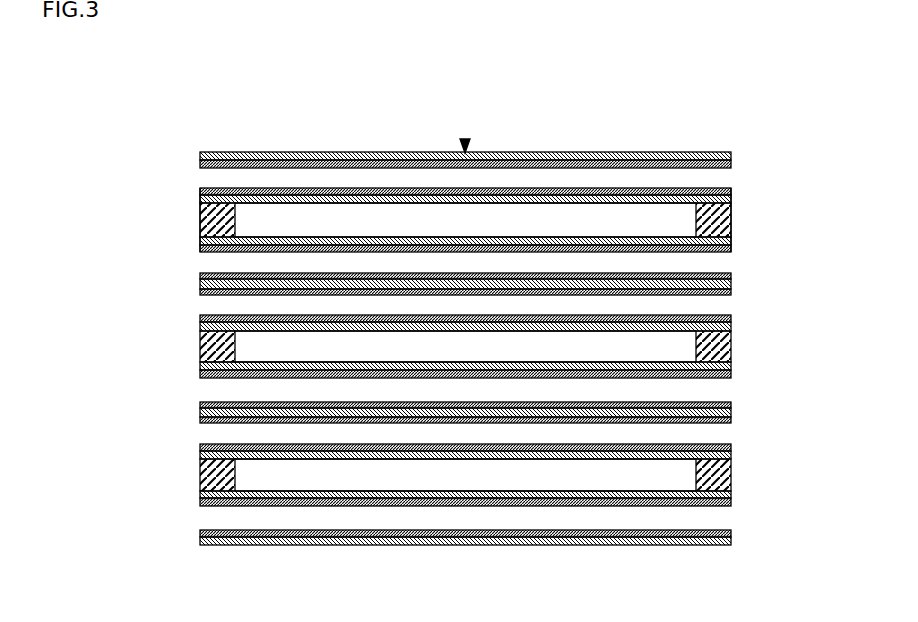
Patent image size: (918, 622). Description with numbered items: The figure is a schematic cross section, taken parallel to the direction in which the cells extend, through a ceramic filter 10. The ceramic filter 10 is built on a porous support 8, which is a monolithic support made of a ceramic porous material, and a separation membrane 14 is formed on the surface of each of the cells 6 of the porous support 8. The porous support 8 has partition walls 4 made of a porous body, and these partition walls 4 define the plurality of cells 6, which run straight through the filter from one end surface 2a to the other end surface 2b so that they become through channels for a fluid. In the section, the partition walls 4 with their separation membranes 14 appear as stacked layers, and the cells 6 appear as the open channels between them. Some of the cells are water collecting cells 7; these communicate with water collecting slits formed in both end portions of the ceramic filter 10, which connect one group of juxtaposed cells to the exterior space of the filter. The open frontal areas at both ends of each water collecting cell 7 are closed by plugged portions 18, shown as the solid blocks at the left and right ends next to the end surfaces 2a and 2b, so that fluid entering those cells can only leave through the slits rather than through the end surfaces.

The ceramic filter 10 is at (778, 107).
The one end surface 2a is at (200, 200).
The other end surface 2b is at (731, 192).
The partition walls 4 is at (531, 196).
The cells 6 is at (338, 177).
The water collecting cells 7 is at (580, 220).
The porous support 8 is at (465, 142).
The separation membrane 14 is at (392, 190).
The plugged portions 18 is at (200, 223).